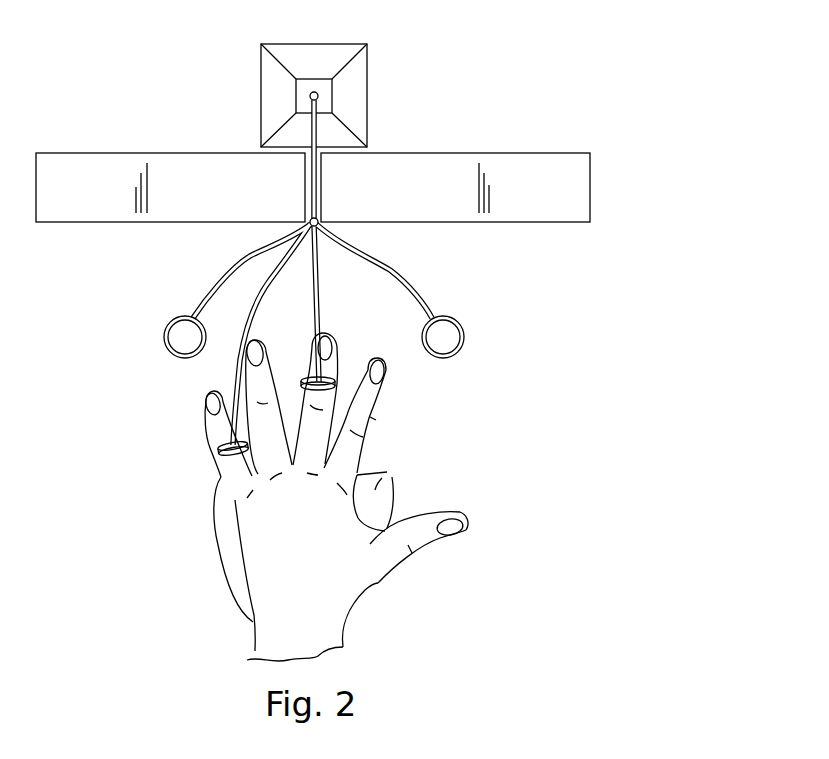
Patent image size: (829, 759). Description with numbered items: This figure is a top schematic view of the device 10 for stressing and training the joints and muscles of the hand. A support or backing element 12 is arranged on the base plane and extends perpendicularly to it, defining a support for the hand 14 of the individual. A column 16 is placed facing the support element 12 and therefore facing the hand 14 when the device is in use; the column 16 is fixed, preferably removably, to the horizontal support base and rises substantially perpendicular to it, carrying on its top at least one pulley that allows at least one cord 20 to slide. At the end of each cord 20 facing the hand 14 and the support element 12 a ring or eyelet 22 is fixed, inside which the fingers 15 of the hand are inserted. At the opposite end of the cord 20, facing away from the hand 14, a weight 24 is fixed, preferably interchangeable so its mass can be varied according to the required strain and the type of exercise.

The device 10 is at (470, 116).
The support element 12 is at (378, 480).
The hand 14 is at (392, 598).
The fingers 15 is at (212, 424).
The column 16 is at (455, 207).
The cord 20 is at (248, 318).
The ring 22 is at (462, 352).
The weight 24 is at (273, 96).